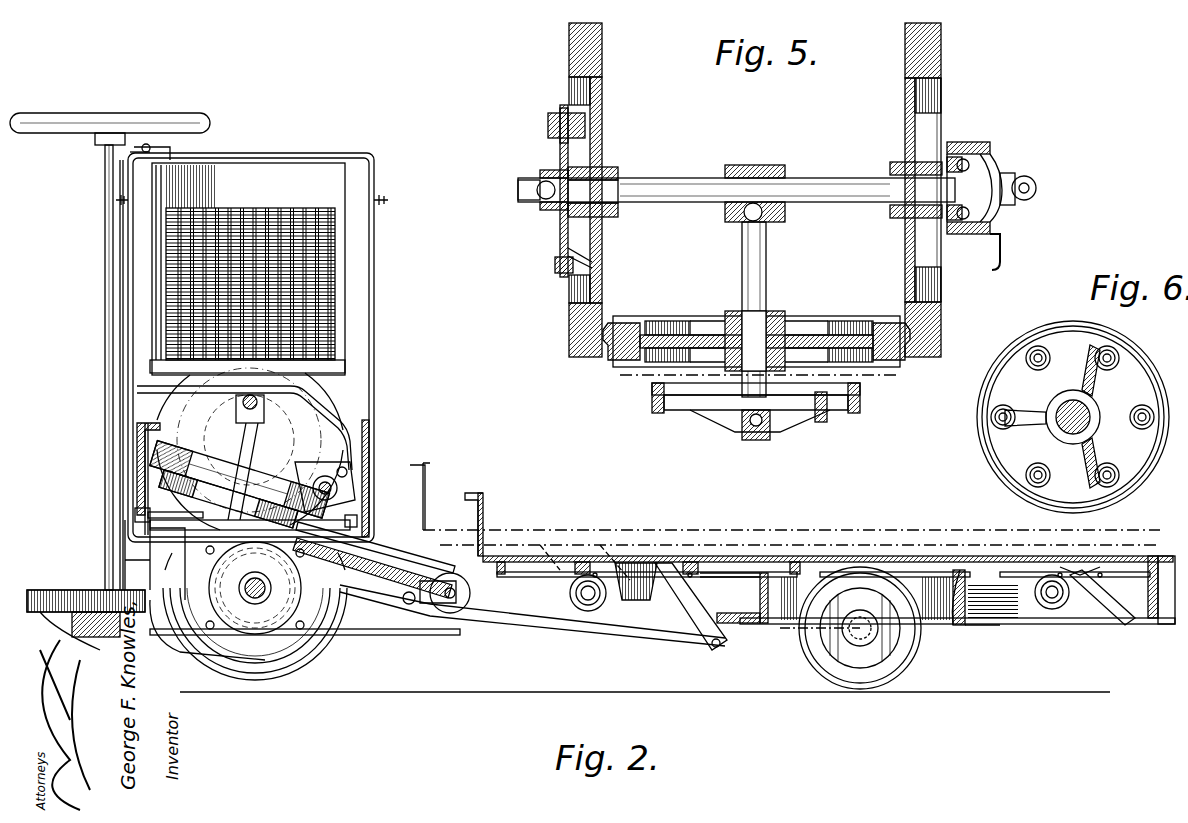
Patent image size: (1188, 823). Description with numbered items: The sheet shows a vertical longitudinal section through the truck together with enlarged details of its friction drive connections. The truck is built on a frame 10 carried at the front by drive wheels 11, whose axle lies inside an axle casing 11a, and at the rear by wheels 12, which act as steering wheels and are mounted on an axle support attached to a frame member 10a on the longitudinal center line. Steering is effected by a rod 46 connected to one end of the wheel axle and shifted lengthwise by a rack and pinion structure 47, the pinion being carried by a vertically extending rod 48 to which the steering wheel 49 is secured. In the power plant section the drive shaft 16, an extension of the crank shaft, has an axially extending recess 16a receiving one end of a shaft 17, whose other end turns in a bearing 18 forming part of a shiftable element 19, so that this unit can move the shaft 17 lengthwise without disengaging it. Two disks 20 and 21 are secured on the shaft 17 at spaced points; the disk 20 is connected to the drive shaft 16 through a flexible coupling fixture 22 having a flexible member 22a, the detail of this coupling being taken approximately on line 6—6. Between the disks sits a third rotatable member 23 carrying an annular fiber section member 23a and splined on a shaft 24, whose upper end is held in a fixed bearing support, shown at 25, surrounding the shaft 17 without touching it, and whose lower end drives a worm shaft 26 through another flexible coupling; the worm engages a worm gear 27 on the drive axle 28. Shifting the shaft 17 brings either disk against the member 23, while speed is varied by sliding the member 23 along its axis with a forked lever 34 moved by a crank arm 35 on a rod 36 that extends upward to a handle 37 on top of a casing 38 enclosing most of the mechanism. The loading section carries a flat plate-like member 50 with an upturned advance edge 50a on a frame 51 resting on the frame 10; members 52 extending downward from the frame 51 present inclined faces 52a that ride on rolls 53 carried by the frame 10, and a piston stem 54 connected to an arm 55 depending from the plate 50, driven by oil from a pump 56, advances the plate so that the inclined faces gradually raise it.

In FIG. 2, the steering wheel 49 is at (84, 113).
In FIG. 2, the handle 37 is at (147, 145).
In FIG. 2, the vertically extending rod 48 is at (105, 300).
In FIG. 2, the casing 38 is at (296, 154).
In FIG. 2, the rod 36 is at (150, 366).
In FIG. 2, the lever 34 is at (250, 430).
In FIG. 2, the shaft 17 is at (258, 403).
In FIG. 5, the shaft 17 is at (681, 200).
In FIG. 2, the disk 20 is at (250, 449).
In FIG. 5, the disk 20 is at (602, 56).
In FIG. 5, the disk 21 is at (905, 58).
In FIG. 5, the flexible coupling fixture 22 is at (562, 112).
In FIG. 6, the flexible coupling fixture 22 is at (1030, 418).
In FIG. 5, the flexible member 22a is at (558, 250).
In FIG. 6, the flexible member 22a is at (1005, 408).
In FIG. 2, the rotatable member 23 is at (160, 450).
In FIG. 5, the rotatable member 23 is at (835, 320).
In FIG. 2, the annular fiber section member 23a is at (170, 478).
In FIG. 5, the annular fiber section member 23a is at (620, 360).
In FIG. 2, the shaft 24 is at (157, 471).
In FIG. 5, the shaft 24 is at (742, 277).
In FIG. 6, the shaft 24 is at (1060, 430).
In FIG. 5, the bearing 25 is at (786, 214).
In FIG. 2, the worm shaft 26 is at (172, 648).
In FIG. 5, the worm shaft 26 is at (762, 440).
In FIG. 5, the drive shaft 16 is at (525, 170).
In FIG. 5, the axially extending recess 16a is at (530, 195).
In FIG. 5, the bearing 18 is at (990, 165).
In FIG. 5, the shiftable element 19 is at (1024, 176).
In FIG. 5, the section line 6 is at (655, 378).
In FIG. 2, the crank arm 35 is at (148, 514).
In FIG. 2, the rack and pinion structure 47 is at (85, 590).
In FIG. 2, the worm gear 27 is at (208, 640).
In FIG. 2, the drive axle 28 is at (252, 606).
In FIG. 2, the drive wheels 11 is at (300, 668).
In FIG. 2, the axle casing 11a is at (283, 660).
In FIG. 2, the piston stem 54 is at (383, 580).
In FIG. 2, the frame 51 is at (543, 570).
In FIG. 2, the frame 10 is at (424, 614).
In FIG. 2, the frame member 10a is at (945, 600).
In FIG. 2, the flat plate-like member 50 is at (752, 557).
In FIG. 2, the upturned advance edge 50a is at (485, 518).
In FIG. 2, the pump 56 is at (355, 522).
In FIG. 2, the roll 53 is at (582, 611).
In FIG. 2, the member 52 is at (640, 598).
In FIG. 2, the inclined edge 52a is at (660, 592).
In FIG. 2, the arm 55 is at (697, 620).
In FIG. 2, the wheels 12 is at (852, 682).
In FIG. 2, the rod 46 is at (398, 695).